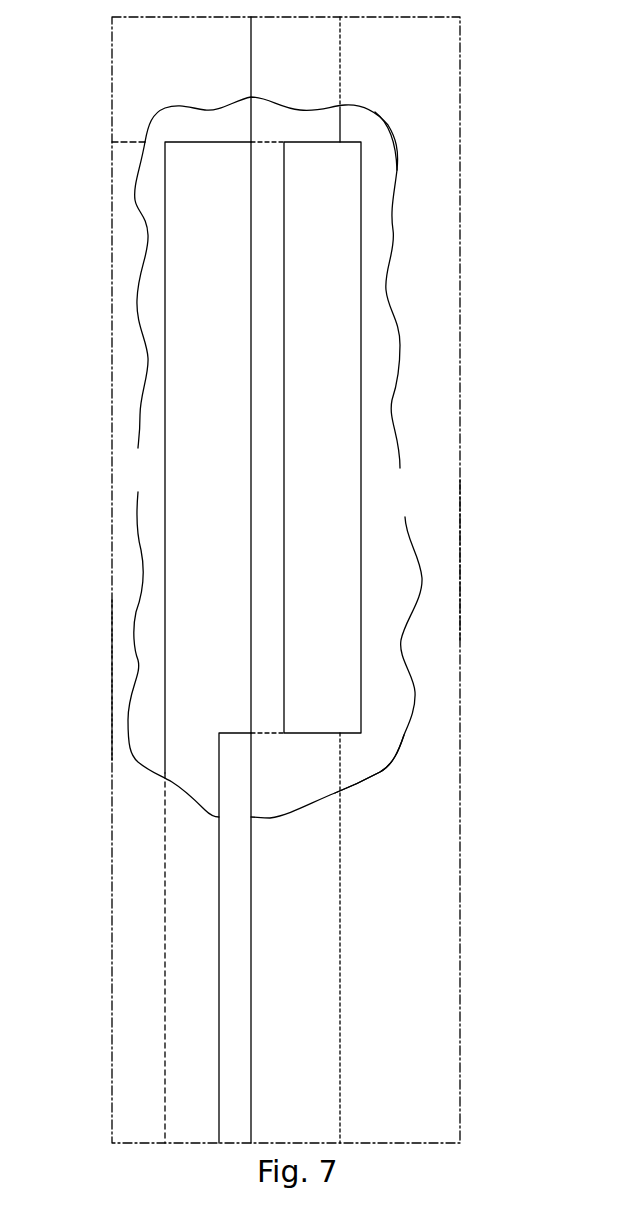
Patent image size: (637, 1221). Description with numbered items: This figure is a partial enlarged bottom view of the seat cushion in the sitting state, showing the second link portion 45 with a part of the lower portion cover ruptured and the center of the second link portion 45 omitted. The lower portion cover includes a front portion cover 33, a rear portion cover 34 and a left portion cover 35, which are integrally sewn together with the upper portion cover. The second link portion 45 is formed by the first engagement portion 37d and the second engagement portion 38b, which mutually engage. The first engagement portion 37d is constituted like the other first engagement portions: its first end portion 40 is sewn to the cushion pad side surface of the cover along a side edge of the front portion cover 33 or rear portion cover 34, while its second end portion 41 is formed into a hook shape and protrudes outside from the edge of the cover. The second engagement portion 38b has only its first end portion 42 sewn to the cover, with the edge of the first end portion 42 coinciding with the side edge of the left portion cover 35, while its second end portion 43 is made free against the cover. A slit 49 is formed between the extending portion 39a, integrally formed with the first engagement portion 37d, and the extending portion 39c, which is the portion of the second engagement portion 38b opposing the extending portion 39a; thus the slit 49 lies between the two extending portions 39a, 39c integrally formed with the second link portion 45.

The front portion cover 33 is at (143, 77).
The rear portion cover 34 is at (125, 660).
The left portion cover 35 is at (437, 535).
The first engagement portion 37d is at (128, 284).
The second engagement portion 38b is at (350, 760).
The extending portion 39a is at (180, 893).
The extending portion 39c is at (313, 1046).
The first end portion 40 is at (185, 375).
The second end portion 41 is at (345, 377).
The first end portion 42 is at (270, 246).
The second end portion 43 is at (318, 84).
The second link portion 45 is at (372, 174).
The slit 49 is at (250, 963).